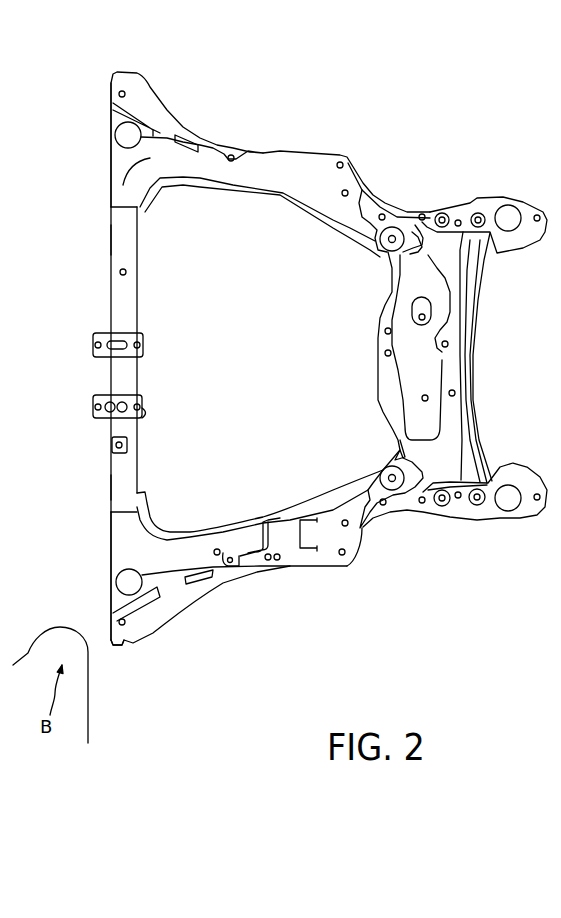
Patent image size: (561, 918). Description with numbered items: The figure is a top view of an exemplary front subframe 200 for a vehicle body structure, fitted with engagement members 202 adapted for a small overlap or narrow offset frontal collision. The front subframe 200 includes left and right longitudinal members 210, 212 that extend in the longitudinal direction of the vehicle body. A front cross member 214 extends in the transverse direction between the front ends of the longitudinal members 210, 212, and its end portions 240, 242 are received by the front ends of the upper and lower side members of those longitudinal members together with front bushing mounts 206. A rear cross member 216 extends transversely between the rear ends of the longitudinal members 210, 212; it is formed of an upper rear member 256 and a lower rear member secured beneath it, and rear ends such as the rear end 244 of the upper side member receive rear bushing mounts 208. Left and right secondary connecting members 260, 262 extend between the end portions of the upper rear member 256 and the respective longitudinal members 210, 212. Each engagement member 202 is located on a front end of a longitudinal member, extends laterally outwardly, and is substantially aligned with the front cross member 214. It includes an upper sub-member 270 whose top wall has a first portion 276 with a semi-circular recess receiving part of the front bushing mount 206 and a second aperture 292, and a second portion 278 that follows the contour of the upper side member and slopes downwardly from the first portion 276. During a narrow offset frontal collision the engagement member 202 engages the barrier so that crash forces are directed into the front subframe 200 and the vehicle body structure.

The front subframe 200 is at (403, 143).
The engagement member 202 is at (286, 387).
The bushing mounts 206 is at (115, 133).
The bushing mounts 208 is at (508, 216).
The left longitudinal member 210 is at (247, 517).
The right longitudinal member 212 is at (290, 213).
The front cross member 214 is at (140, 284).
The rear cross member 216 is at (470, 347).
The end portion of the front cross member 240 is at (110, 488).
The end portion of the front cross member 242 is at (110, 240).
The rear end of the upper side member 244 is at (500, 520).
The upper rear member 256 is at (447, 377).
The left secondary connecting member 260 is at (390, 463).
The right secondary connecting member 262 is at (380, 250).
The upper sub-member 270 is at (188, 118).
The first portion 276 is at (110, 605).
The second portion 278 is at (215, 572).
The second aperture 292 is at (111, 88).